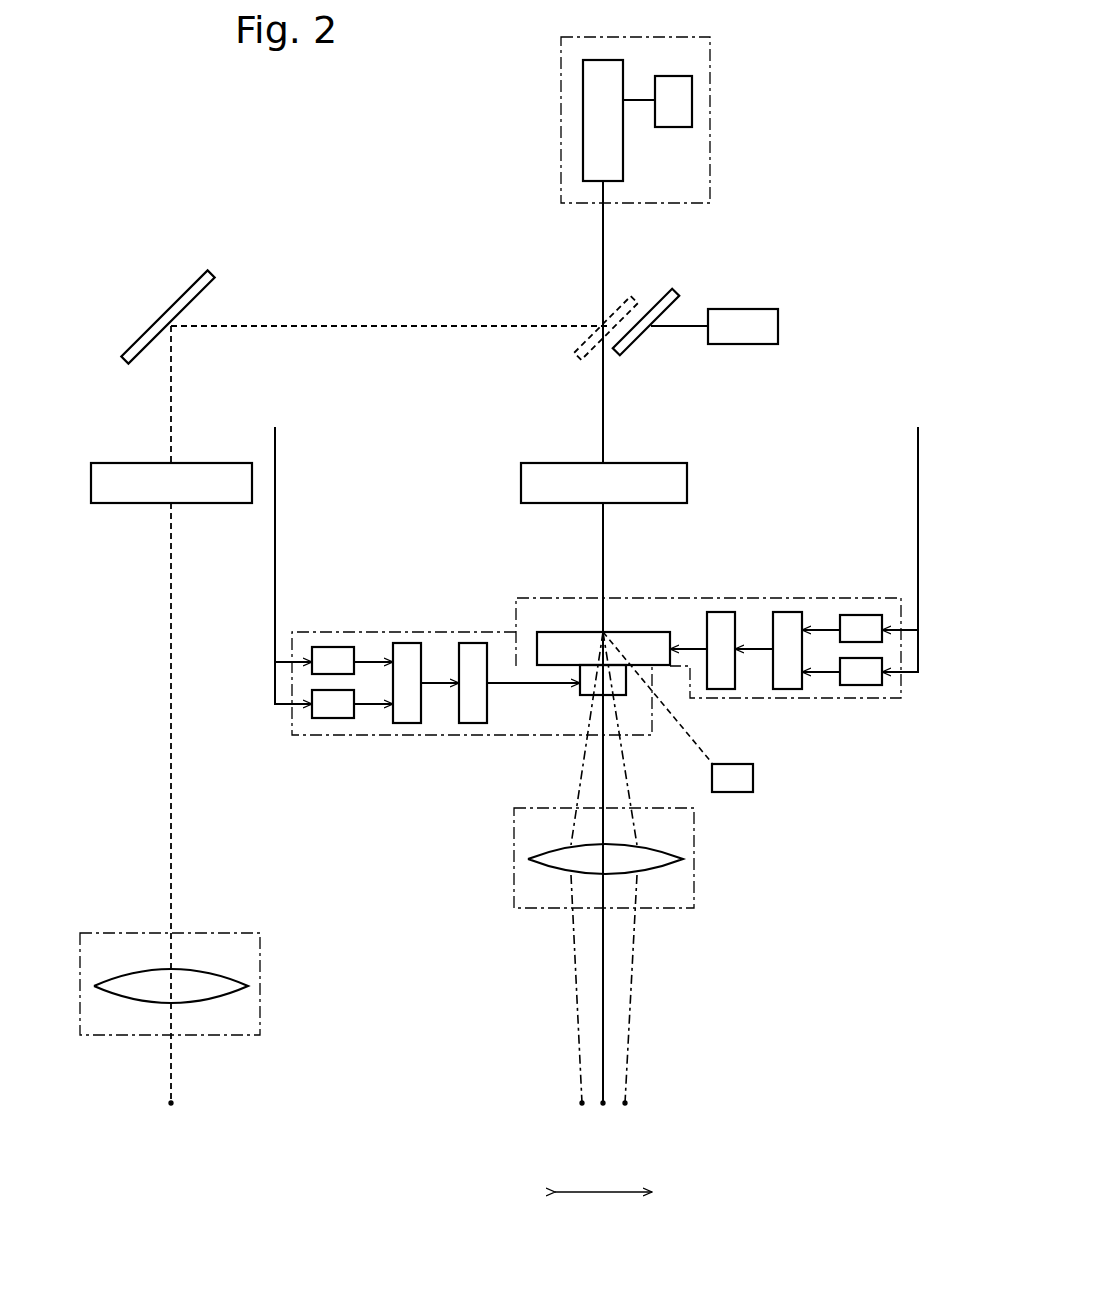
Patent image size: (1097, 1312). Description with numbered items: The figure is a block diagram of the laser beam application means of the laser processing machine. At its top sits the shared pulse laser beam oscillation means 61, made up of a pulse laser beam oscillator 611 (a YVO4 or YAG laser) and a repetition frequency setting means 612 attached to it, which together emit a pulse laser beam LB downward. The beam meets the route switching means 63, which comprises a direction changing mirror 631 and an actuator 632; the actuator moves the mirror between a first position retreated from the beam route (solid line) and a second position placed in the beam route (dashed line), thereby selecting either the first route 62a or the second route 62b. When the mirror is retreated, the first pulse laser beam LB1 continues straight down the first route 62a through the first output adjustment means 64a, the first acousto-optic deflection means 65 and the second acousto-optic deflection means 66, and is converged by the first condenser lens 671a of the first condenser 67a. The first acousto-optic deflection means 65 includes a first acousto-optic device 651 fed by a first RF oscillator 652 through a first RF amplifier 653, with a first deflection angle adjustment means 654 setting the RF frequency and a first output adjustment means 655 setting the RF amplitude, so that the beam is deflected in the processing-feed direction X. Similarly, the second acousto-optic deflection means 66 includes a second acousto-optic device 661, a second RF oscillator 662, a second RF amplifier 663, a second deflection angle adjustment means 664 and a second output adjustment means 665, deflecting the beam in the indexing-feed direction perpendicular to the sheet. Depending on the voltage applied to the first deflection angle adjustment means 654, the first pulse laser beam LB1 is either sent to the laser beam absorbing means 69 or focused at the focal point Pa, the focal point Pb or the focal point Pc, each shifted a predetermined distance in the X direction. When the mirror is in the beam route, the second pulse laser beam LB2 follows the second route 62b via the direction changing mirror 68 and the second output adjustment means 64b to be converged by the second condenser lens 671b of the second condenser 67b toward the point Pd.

The pulse laser beam oscillation means 61 is at (591, 120).
The pulse laser beam oscillator 611 is at (612, 167).
The repetition frequency setting means 612 is at (681, 118).
The first route 62a is at (577, 391).
The second route 62b is at (453, 338).
The route switching means 63 is at (701, 297).
The direction changing mirror 631 is at (634, 344).
The actuator 632 is at (748, 333).
The first output adjustment means 64a is at (675, 486).
The second output adjustment means 64b is at (232, 472).
The first acousto-optic deflection means 65 is at (708, 629).
The first acousto-optic device 651 is at (640, 636).
The first RF oscillator 652 is at (788, 690).
The first RF amplifier 653 is at (722, 690).
The first deflection angle adjustment means 654 is at (862, 686).
The first output adjustment means 655 is at (865, 614).
The second acousto-optic deflection means 66 is at (472, 667).
The second acousto-optic device 661 is at (590, 696).
The second RF oscillator 662 is at (407, 702).
The second RF amplifier 663 is at (473, 702).
The second deflection angle adjustment means 664 is at (331, 702).
The second output adjustment means 665 is at (335, 654).
The first condenser 67a is at (655, 881).
The first condenser lens 671a is at (660, 868).
The second condenser 67b is at (220, 961).
The second condenser lens 671b is at (198, 978).
The direction changing mirror 68 is at (171, 310).
The laser beam absorbing means 69 is at (745, 777).
The pulse laser beam LB is at (603, 243).
The first pulse laser beam LB1 is at (603, 400).
The second pulse laser beam LB2 is at (431, 325).
The focal point Pa is at (626, 1103).
The focal point Pb is at (603, 1103).
The focal point Pc is at (581, 1103).
The irradiation point Pd is at (173, 1103).
The processing-feed direction X is at (603, 1208).